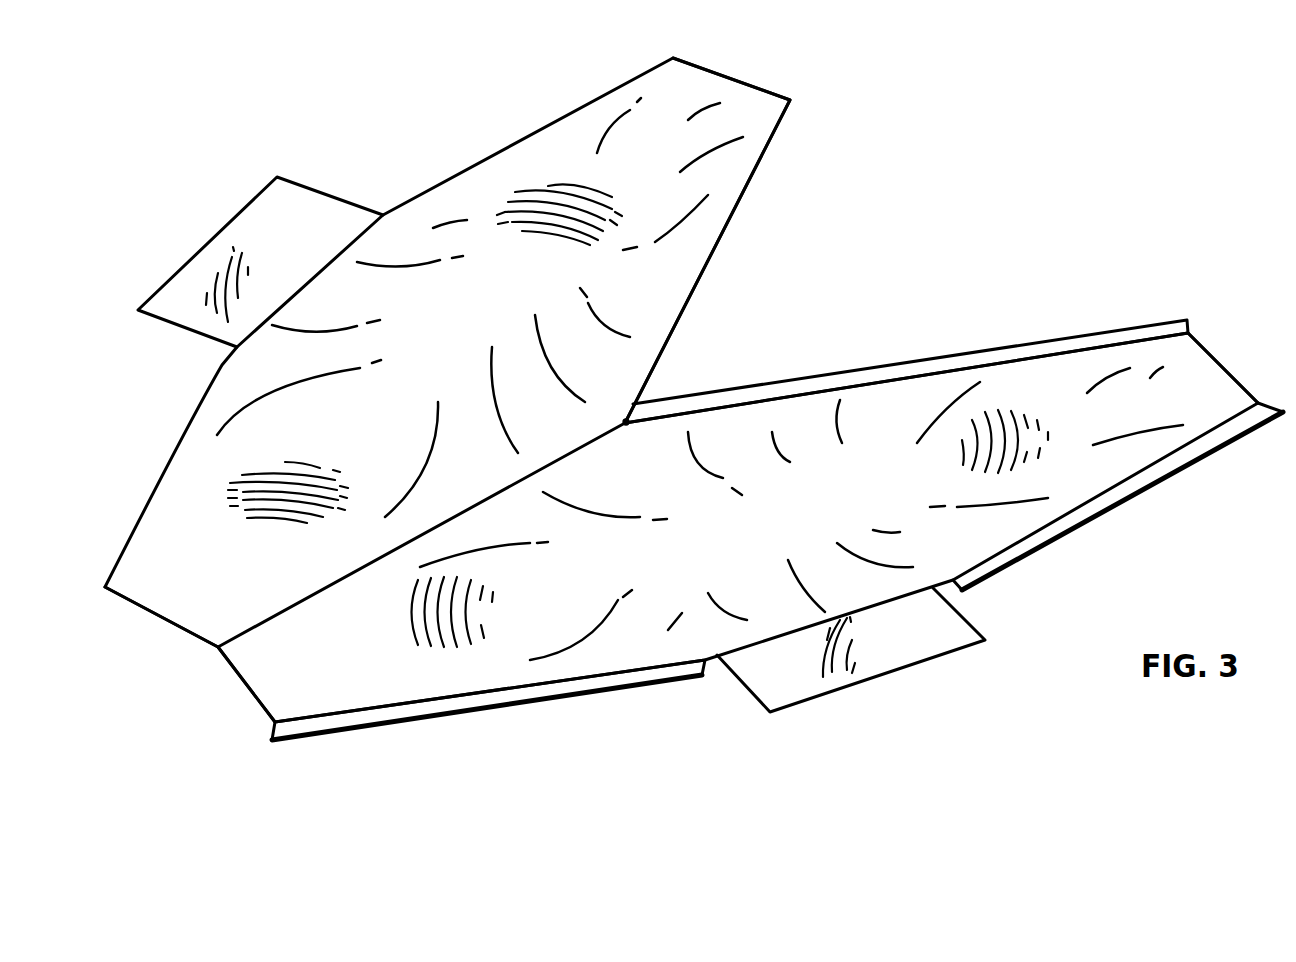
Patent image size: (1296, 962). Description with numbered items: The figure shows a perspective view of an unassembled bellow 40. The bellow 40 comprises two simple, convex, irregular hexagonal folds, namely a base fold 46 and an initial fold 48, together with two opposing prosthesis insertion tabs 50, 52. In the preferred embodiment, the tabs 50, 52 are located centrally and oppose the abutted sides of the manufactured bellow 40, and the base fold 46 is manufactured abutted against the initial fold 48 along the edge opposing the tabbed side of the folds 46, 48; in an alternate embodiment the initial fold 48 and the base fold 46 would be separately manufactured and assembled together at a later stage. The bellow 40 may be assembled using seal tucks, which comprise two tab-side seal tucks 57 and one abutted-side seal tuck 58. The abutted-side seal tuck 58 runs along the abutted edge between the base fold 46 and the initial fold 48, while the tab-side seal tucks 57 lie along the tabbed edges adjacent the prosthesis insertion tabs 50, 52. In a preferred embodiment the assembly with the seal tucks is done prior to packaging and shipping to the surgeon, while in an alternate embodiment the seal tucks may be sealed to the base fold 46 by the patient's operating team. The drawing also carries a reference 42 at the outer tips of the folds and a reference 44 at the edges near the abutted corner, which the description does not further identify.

The bellow 40 is at (981, 102).
The wing tip 42 is at (743, 67).
The leading edge 44 is at (146, 613).
The base fold 46 is at (477, 345).
The initial fold 48 is at (827, 512).
The prosthesis insertion tab 50 is at (760, 677).
The prosthesis insertion tab 52 is at (193, 279).
The tab-side seal tuck 57 is at (1188, 452).
The abutted-side seal tuck 58 is at (918, 369).